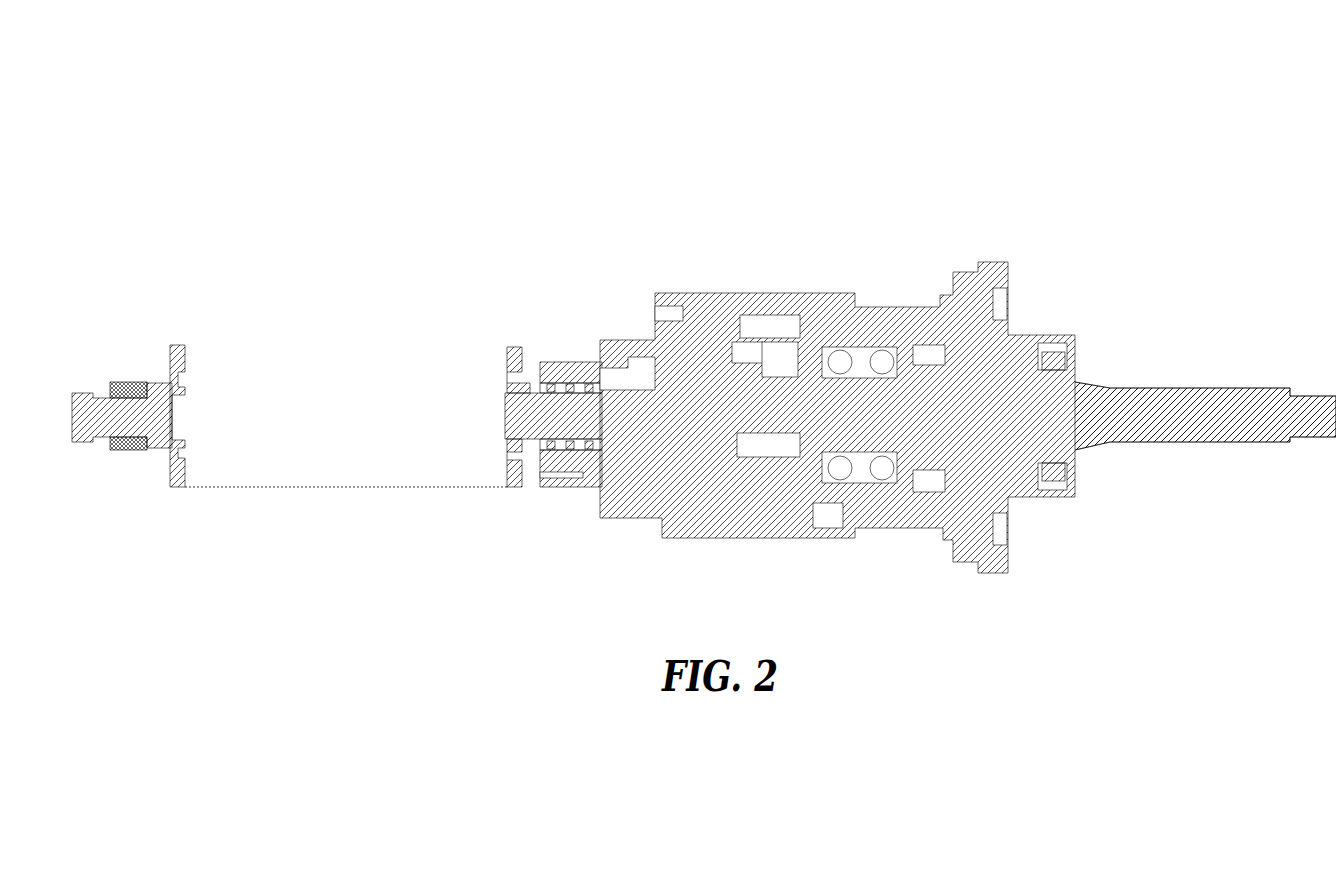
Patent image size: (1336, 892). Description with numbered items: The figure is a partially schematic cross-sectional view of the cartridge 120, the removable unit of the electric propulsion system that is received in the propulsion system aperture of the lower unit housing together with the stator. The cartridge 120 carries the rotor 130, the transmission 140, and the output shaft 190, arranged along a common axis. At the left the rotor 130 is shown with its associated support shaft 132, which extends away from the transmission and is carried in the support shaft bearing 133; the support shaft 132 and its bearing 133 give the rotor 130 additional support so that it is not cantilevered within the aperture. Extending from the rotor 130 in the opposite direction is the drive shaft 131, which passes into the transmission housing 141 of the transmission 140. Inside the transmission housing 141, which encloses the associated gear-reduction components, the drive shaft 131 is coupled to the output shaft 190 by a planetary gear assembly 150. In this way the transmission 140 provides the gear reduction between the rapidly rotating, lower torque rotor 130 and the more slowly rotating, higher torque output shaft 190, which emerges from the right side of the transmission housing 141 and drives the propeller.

The cartridge 120 is at (810, 99).
The rotor 130 is at (348, 488).
The drive shaft 131 is at (598, 410).
The support shaft 132 is at (158, 407).
The support shaft bearing 133 is at (133, 457).
The transmission 140 is at (968, 373).
The transmission housing 141 is at (776, 292).
The planetary gear assembly 150 is at (648, 540).
The output shaft 190 is at (1258, 398).